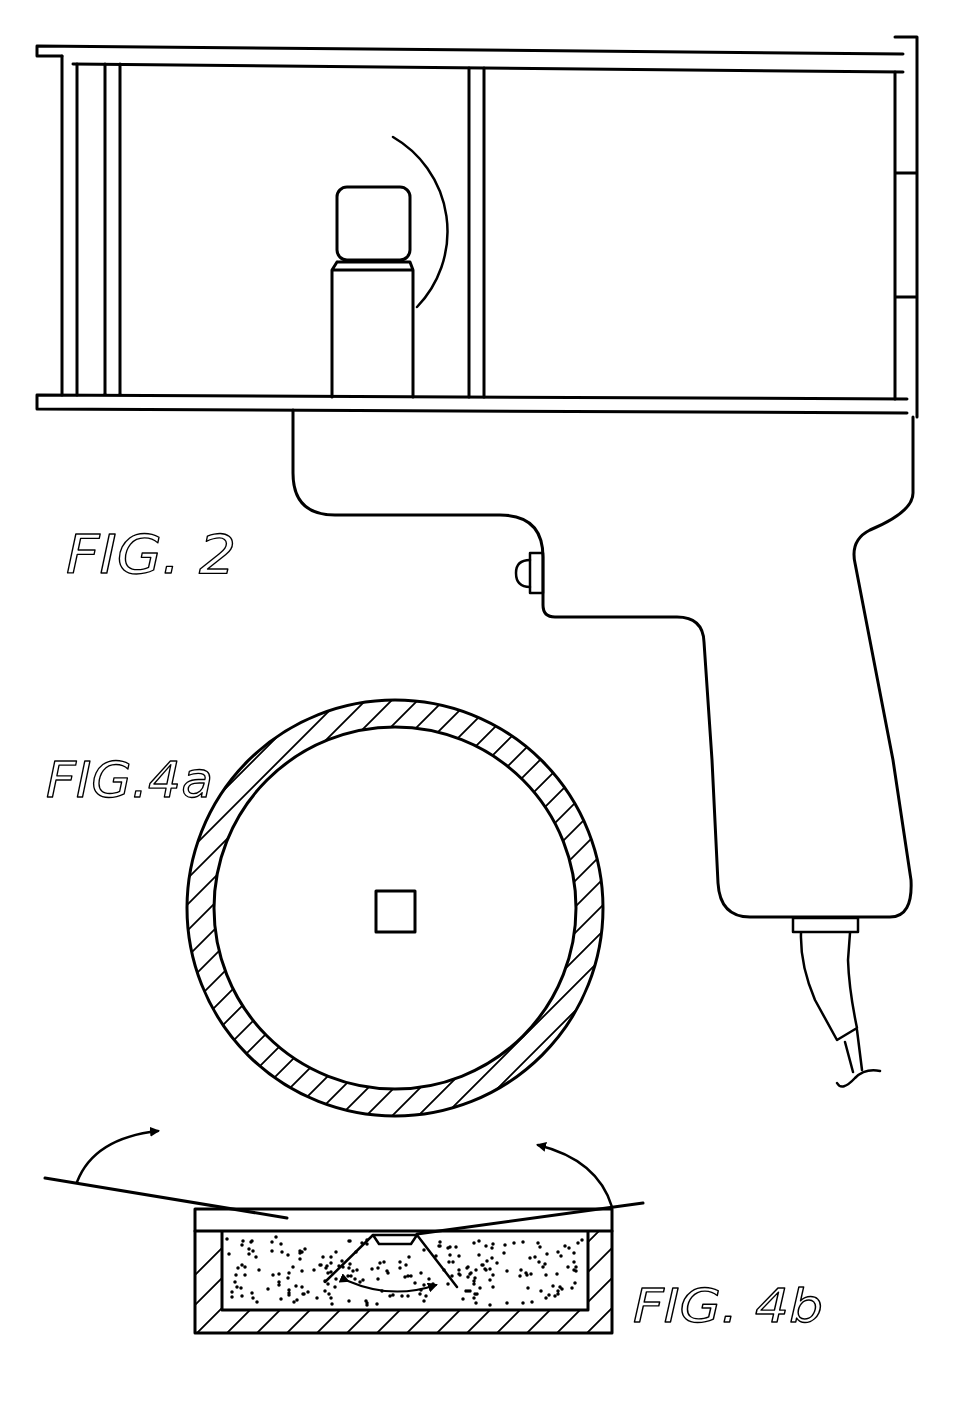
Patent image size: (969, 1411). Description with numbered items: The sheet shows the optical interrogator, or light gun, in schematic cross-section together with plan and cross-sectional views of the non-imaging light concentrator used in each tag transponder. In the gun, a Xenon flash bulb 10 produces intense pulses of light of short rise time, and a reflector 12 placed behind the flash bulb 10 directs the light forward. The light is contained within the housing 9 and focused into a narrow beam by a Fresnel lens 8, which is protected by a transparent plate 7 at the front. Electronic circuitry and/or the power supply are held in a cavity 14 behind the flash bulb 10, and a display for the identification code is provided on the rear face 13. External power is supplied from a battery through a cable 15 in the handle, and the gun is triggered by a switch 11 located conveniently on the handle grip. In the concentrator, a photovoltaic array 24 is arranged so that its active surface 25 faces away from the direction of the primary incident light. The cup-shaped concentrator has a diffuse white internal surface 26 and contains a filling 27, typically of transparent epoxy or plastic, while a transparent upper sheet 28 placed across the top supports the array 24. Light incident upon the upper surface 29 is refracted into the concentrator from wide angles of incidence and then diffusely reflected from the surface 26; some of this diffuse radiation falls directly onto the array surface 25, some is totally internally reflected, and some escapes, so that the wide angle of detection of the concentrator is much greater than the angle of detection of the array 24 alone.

In FIG. 2, the transparent plate 7 is at (63, 257).
In FIG. 2, the Fresnel lens 8 is at (117, 367).
In FIG. 2, the housing 9 is at (343, 62).
In FIG. 2, the Xenon flash bulb 10 is at (347, 208).
In FIG. 2, the switch 11 is at (523, 590).
In FIG. 2, the reflector 12 is at (433, 177).
In FIG. 2, the rear face 13 is at (900, 243).
In FIG. 2, the cavity 14 is at (680, 380).
In FIG. 2, the cable 15 is at (820, 973).
In FIG. 4A, the photovoltaic array 24 is at (403, 898).
In FIG. 4B, the photovoltaic array 24 is at (390, 1235).
In FIG. 4B, the active surface 25 is at (385, 1248).
In FIG. 4B, the diffuse white internal surface 26 is at (483, 1317).
In FIG. 4B, the filling 27 is at (307, 1240).
In FIG. 4B, the transparent upper sheet 28 is at (260, 1220).
In FIG. 4B, the upper surface 29 is at (553, 1210).